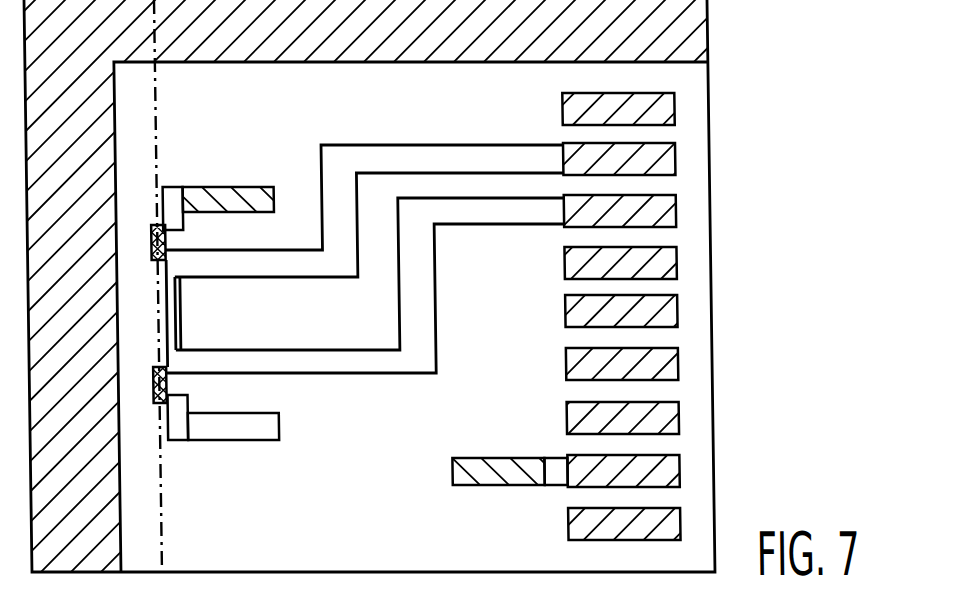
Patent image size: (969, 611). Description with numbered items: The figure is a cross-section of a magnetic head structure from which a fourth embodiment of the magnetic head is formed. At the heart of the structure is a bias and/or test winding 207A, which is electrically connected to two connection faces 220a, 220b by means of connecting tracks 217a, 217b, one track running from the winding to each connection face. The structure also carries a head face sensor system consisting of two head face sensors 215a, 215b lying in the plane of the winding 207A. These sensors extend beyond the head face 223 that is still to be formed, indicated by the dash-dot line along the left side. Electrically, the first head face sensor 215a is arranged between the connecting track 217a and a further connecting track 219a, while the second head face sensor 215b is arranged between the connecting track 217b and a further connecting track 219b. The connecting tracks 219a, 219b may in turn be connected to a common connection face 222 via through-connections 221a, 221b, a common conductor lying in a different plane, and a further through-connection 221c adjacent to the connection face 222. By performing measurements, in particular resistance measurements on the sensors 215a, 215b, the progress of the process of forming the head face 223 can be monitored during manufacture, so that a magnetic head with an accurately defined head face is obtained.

The head face 223 is at (156, 97).
The connecting track 219a is at (171, 187).
The through-connection 221a is at (240, 187).
The head face sensor 215a is at (157, 241).
The connecting track 217a is at (361, 157).
The bias and/or test winding 207A is at (177, 313).
The connecting track 217b is at (360, 362).
The head face sensor 215b is at (158, 385).
The connecting track 219b is at (171, 430).
The through-connection 221b is at (245, 434).
The third contact 221c is at (501, 475).
The connection face 220a is at (635, 160).
The connection face 220b is at (632, 212).
The connection face 222 is at (643, 472).